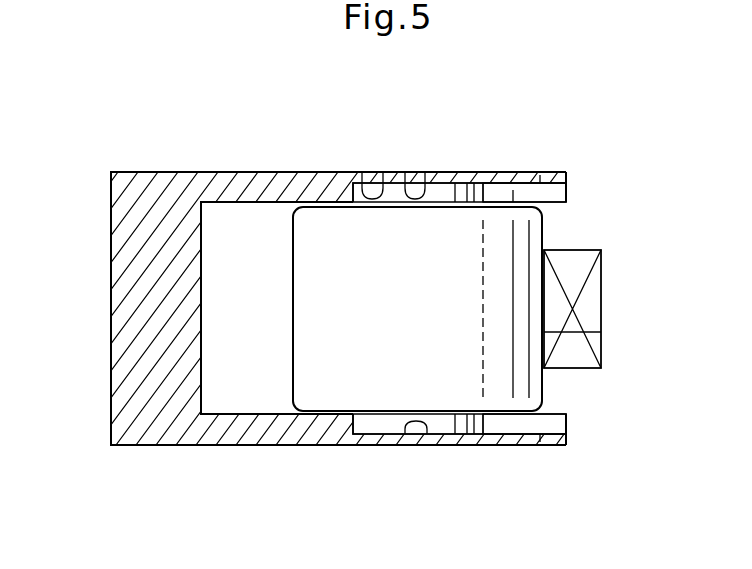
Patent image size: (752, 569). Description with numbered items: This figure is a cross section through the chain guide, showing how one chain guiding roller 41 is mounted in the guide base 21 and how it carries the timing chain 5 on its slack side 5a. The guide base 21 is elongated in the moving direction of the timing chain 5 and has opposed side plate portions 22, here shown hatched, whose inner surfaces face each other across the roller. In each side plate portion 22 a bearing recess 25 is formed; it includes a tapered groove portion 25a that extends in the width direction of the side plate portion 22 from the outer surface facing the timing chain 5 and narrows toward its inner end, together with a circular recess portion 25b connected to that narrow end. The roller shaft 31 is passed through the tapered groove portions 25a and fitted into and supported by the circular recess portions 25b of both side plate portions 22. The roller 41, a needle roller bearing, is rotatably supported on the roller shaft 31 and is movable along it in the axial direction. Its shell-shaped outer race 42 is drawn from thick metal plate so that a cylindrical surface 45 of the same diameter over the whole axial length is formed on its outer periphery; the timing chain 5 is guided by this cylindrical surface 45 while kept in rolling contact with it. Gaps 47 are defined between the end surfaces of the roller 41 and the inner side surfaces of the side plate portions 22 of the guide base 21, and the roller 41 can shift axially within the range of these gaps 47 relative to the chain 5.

The timing chain 5 is at (603, 260).
The slack side 5a is at (590, 305).
The guide base 21 is at (111, 222).
The side plate portion 22 is at (217, 172).
The bearing recess 25 is at (424, 172).
The tapered groove portion 25a is at (498, 180).
The circular recess portion 25b is at (382, 172).
The roller shaft 31 is at (447, 180).
The chain guiding roller 41 is at (516, 198).
The outer race 42 is at (513, 285).
The cylindrical surface 45 is at (601, 332).
The gap 47 is at (545, 173).